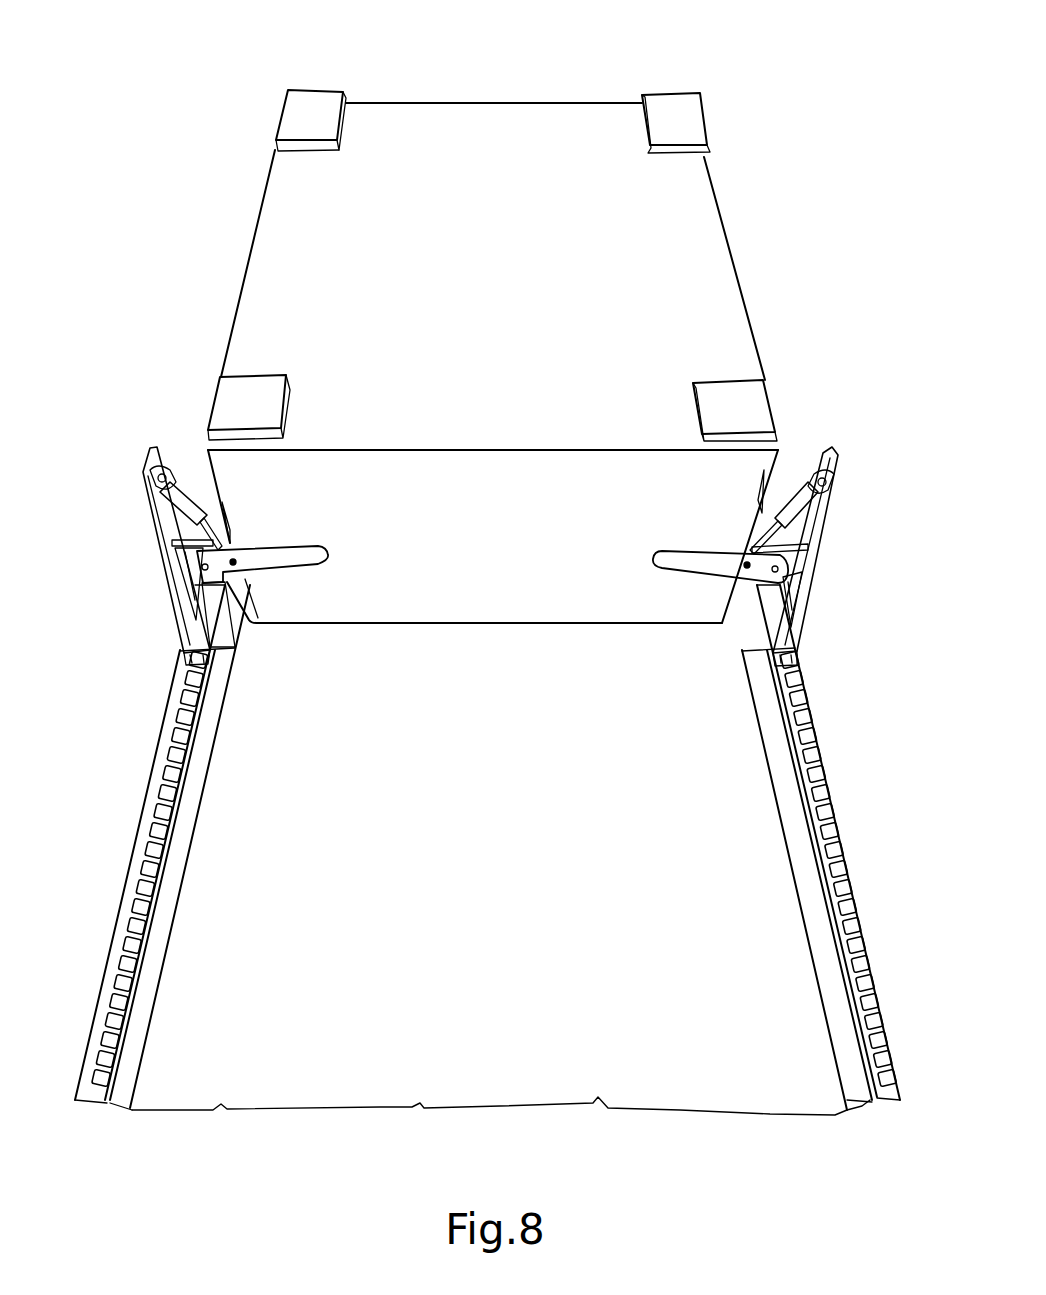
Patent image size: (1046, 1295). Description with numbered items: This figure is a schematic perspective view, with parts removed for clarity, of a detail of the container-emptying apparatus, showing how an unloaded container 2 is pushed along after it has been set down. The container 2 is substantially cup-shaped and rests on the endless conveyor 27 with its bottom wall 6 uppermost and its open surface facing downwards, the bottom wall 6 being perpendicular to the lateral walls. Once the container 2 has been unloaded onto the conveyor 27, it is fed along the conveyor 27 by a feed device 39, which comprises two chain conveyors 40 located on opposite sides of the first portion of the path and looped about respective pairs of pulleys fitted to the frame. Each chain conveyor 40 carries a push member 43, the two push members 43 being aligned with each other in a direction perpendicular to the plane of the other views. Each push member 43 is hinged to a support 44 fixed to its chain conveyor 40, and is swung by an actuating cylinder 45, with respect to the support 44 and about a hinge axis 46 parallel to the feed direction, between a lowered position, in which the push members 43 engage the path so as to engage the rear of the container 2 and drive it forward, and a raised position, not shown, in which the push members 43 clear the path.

The container 2 is at (740, 243).
The bottom wall 6 is at (585, 142).
The endless conveyor 27 is at (692, 1100).
The feed device 39 is at (839, 775).
The chain conveyor 40 is at (163, 828).
The push member 43 is at (268, 570).
The support 44 is at (192, 640).
The actuating cylinder 45 is at (177, 483).
The hinge axis 46 is at (182, 588).